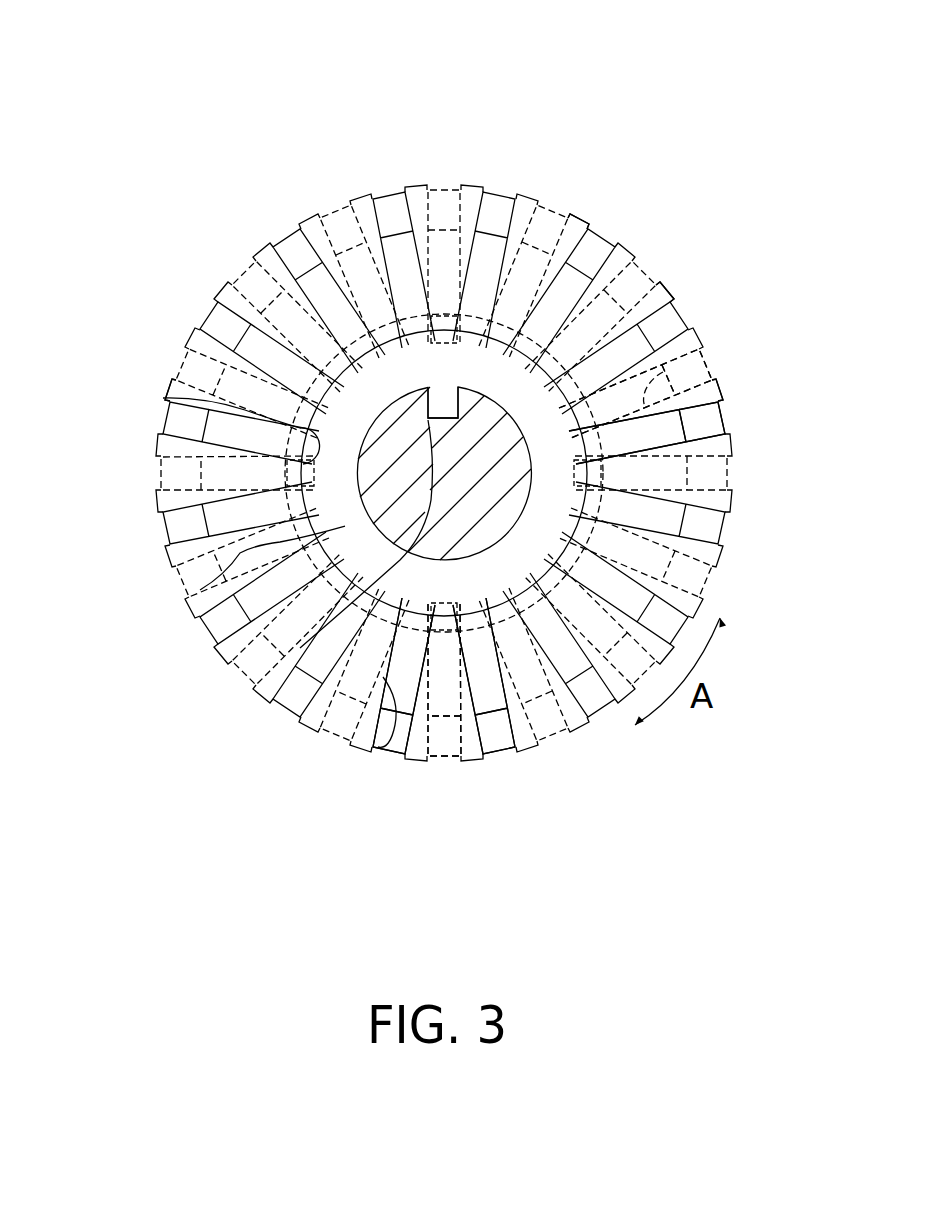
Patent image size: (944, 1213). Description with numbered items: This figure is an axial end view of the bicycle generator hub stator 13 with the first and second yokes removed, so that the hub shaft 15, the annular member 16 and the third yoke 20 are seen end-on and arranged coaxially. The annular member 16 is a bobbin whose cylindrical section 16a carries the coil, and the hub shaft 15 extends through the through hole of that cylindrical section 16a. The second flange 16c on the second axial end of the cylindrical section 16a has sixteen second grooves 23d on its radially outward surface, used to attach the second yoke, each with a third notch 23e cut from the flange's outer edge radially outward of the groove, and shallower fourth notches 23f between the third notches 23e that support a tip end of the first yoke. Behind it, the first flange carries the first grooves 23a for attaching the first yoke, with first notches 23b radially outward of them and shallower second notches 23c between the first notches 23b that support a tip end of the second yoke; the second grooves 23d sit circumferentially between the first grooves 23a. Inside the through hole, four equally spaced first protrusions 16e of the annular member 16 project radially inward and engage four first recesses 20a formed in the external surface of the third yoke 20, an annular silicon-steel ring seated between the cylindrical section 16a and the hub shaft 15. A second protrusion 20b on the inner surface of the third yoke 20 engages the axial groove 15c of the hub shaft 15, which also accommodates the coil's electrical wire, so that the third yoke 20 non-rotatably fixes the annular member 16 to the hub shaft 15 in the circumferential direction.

The bicycle generator hub stator 13 is at (352, 137).
The hub shaft 15 is at (362, 418).
The axial groove 15c is at (440, 408).
The annular member 16 is at (290, 188).
The cylindrical section 16a is at (662, 290).
The second flange 16c is at (591, 197).
The first protrusion 16e is at (163, 398).
The third yoke 20 is at (200, 590).
The first recess 20a is at (297, 480).
The second protrusion 20b is at (300, 648).
The first groove 23a is at (708, 368).
The first notch 23b is at (720, 383).
The second notch 23c is at (720, 415).
The second groove 23d is at (377, 750).
The third notch 23e is at (497, 715).
The fourth notch 23f is at (460, 760).